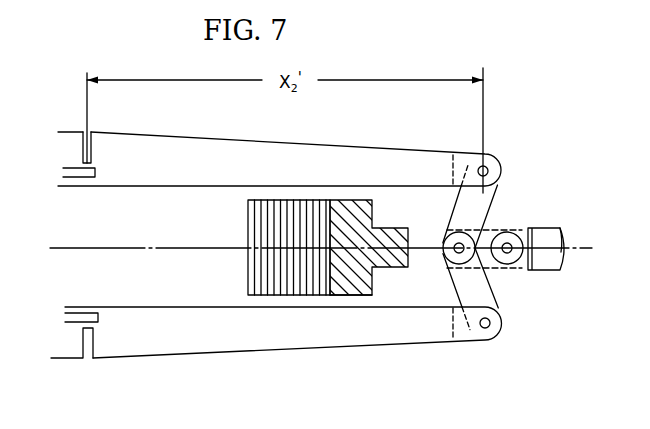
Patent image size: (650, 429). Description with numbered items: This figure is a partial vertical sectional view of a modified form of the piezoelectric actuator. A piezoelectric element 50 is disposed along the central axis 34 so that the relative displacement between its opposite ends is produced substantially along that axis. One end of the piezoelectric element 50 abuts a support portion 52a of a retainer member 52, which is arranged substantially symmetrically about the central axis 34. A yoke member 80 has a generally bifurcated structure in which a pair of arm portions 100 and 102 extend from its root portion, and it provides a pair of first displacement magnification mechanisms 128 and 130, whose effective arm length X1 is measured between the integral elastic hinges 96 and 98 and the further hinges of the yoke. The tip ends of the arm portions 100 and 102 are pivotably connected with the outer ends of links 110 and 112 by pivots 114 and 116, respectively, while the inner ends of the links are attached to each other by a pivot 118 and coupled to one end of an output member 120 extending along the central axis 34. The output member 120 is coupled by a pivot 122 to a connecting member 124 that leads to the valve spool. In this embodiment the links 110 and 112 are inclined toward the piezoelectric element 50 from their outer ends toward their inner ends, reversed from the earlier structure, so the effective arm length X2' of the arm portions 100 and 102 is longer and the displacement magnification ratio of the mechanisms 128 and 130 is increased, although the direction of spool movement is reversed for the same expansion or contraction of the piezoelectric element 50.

The central axis 34 is at (152, 246).
The piezoelectric element 50 is at (283, 207).
The retainer member 52 is at (357, 205).
The support portion 52a is at (356, 298).
The yoke member 80 is at (66, 130).
The integral elastic hinge 96 is at (93, 162).
The integral elastic hinge 98 is at (95, 324).
The arm portion 100 is at (247, 150).
The arm portion 102 is at (285, 340).
The link 110 is at (489, 197).
The link 112 is at (486, 298).
The pivot 114 is at (489, 167).
The pivot 116 is at (496, 335).
The pivot 118 is at (446, 238).
The output member 120 is at (494, 270).
The pivot 122 is at (508, 231).
The connecting member 124 is at (558, 264).
The first displacement magnification mechanism 128 is at (113, 161).
The first displacement magnification mechanism 130 is at (126, 324).